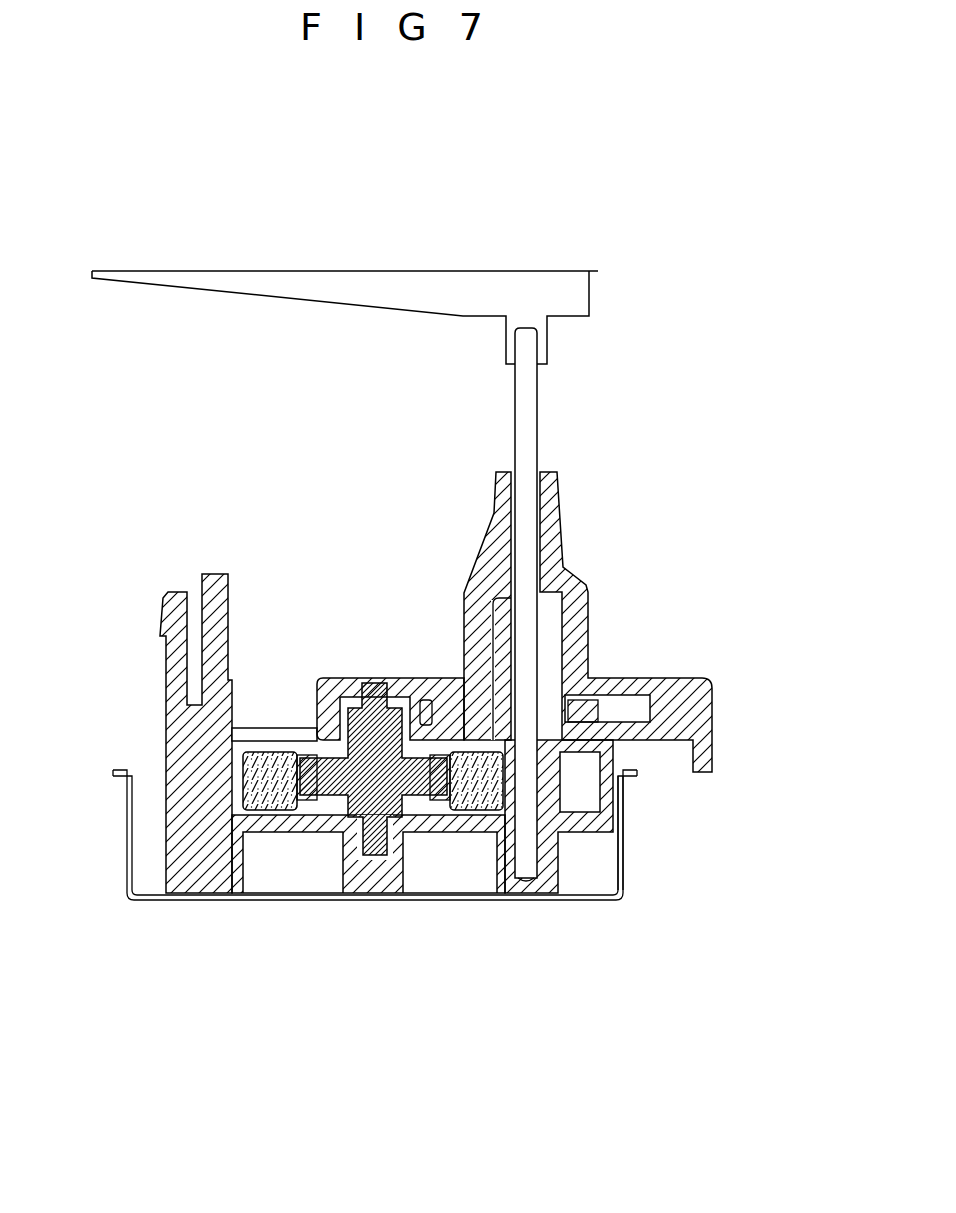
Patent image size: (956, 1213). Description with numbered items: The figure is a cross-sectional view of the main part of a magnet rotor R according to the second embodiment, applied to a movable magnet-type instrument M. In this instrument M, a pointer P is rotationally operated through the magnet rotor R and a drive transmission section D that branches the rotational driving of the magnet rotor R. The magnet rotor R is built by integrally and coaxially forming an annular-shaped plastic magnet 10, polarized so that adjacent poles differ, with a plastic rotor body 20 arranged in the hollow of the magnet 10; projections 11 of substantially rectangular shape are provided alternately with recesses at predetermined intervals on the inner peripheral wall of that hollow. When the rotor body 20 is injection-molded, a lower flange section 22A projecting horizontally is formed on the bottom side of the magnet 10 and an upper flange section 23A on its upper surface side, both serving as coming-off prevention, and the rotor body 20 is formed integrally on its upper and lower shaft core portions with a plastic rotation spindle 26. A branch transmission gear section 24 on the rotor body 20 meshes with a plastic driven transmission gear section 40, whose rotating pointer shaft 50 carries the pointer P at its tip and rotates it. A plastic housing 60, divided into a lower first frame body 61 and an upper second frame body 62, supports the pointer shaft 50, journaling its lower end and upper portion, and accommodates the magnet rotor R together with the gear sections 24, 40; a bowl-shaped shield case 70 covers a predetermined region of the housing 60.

The annular-shaped plastic magnet 10 is at (263, 795).
The projections 11 is at (306, 790).
The rotor body 20 is at (357, 789).
The lower flange section 22A is at (330, 800).
The upper flange section 23A is at (290, 727).
The branch transmission gear section 24 is at (357, 789).
The rotation spindle 26 is at (374, 695).
The driven transmission gear section 40 is at (422, 720).
The pointer shaft 50 is at (527, 437).
The housing 60 is at (596, 653).
The first frame body 61 is at (610, 798).
The second frame body 62 is at (670, 702).
The shield case 70 is at (127, 838).
The pointer P is at (372, 272).
The movable magnet-type instrument M is at (632, 474).
The drive transmission section D is at (600, 708).
The magnet rotor R is at (585, 950).